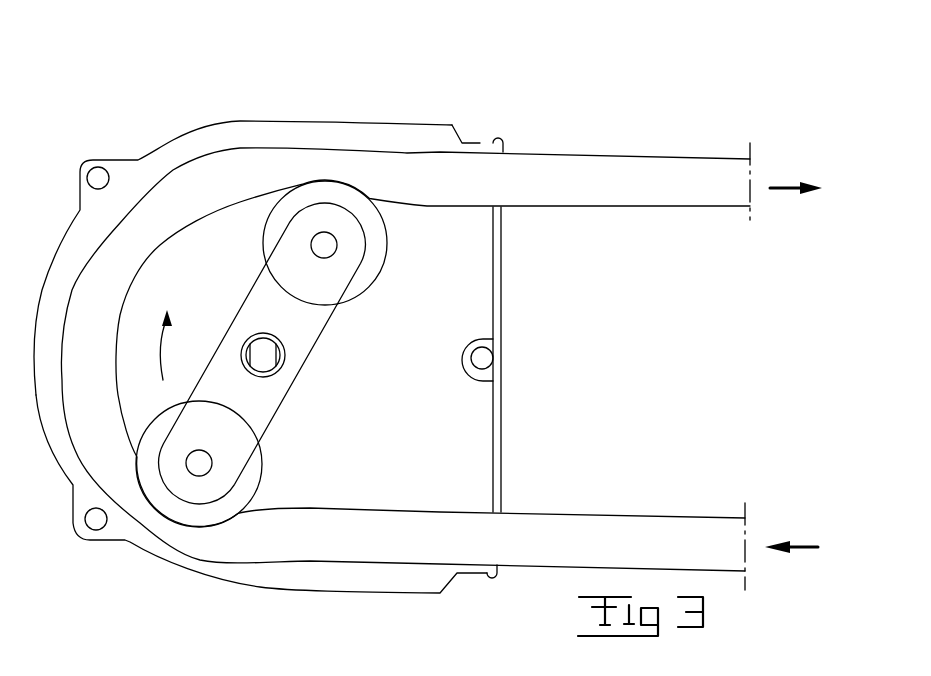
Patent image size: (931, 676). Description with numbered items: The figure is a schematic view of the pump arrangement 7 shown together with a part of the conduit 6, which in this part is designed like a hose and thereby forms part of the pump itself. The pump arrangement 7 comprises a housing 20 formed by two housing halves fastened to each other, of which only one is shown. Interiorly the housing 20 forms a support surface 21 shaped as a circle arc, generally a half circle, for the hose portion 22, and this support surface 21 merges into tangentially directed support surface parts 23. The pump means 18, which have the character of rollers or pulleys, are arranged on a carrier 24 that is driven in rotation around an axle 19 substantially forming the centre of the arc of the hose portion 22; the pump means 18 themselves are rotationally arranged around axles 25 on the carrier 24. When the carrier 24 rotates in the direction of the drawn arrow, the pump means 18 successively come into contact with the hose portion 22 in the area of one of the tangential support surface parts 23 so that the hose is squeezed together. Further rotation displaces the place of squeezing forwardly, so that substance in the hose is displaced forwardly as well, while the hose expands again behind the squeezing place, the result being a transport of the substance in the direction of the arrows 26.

The conduit 6 is at (637, 166).
The pump arrangement 7 is at (170, 94).
The pump means 18 is at (378, 230).
The axle 19 is at (268, 357).
The housing 20 is at (337, 133).
The support surface 21 is at (83, 266).
The hose portion 22 is at (100, 403).
The tangentially directed support surface parts 23 is at (386, 158).
The carrier 24 is at (260, 308).
The axles 25 is at (199, 458).
The arrows 26 is at (787, 192).